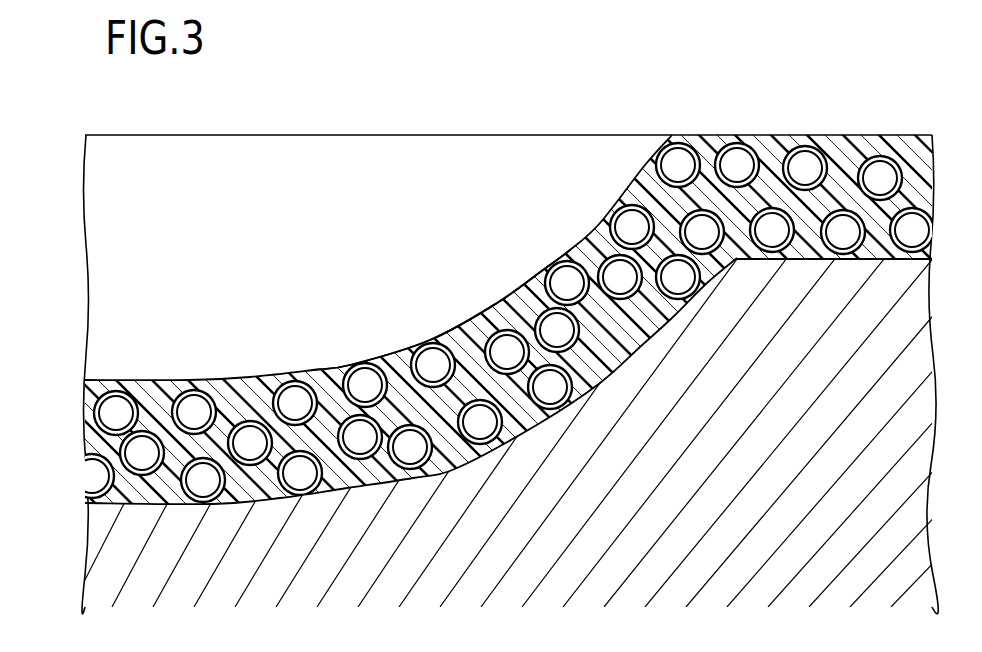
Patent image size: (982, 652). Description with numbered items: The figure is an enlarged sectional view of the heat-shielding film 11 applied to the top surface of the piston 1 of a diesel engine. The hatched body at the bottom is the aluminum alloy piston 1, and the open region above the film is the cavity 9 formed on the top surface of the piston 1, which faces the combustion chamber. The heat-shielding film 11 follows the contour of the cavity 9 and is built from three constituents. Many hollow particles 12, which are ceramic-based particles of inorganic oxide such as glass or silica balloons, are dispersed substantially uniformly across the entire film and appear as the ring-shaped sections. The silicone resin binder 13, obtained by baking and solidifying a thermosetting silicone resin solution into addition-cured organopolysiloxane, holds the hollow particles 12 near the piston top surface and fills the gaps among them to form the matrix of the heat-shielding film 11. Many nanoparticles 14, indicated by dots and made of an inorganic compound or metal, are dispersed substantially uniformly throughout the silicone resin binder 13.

The piston 1 is at (100, 554).
The cavity 9 is at (330, 150).
The heat-shielding film 11 is at (491, 367).
The hollow particle 12 is at (805, 142).
The silicone resin binder 13 is at (446, 332).
The nanoparticle 14 is at (495, 310).